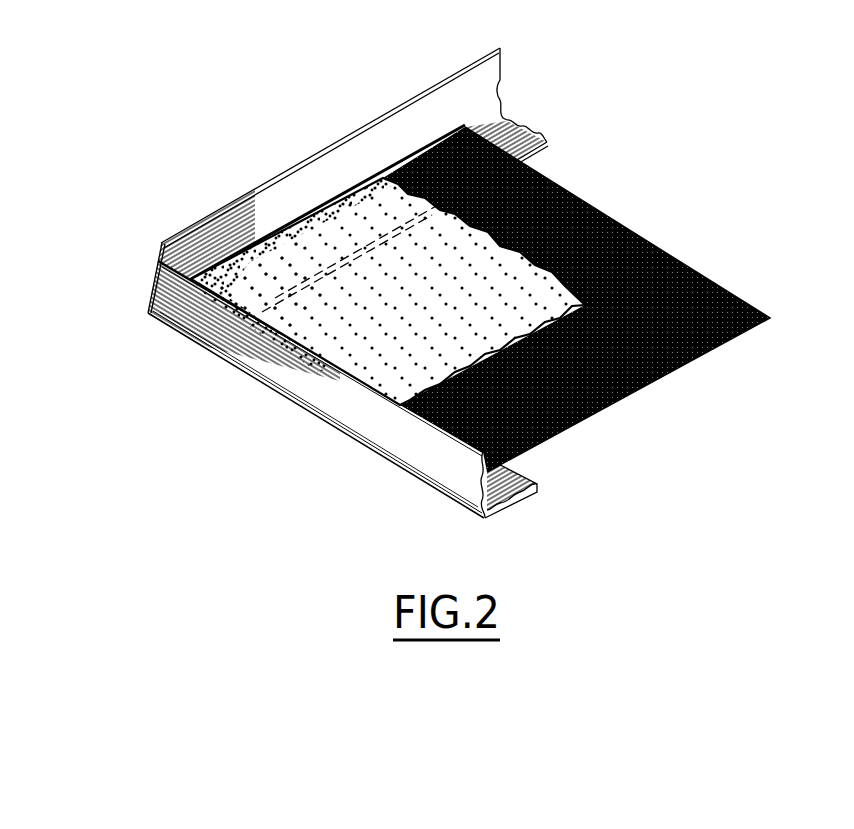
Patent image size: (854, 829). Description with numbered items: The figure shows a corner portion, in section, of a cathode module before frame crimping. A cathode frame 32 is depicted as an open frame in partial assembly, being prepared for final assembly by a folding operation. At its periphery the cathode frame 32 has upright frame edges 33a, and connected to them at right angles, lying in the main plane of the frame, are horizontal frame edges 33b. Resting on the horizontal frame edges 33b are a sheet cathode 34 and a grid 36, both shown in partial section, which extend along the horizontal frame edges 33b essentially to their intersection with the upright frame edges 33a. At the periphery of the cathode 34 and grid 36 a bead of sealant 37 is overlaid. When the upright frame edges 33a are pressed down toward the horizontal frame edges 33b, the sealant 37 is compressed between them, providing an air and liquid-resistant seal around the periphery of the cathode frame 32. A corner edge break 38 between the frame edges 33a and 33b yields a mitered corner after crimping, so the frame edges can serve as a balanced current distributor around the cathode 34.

The cathode frame 32 is at (422, 282).
The upright frame edges 33a is at (501, 92).
The horizontal frame edges 33b is at (536, 133).
The sheet cathode 34 is at (563, 340).
The grid 36 is at (683, 370).
The bead of sealant 37 is at (384, 177).
The corner edge break 38 is at (160, 267).